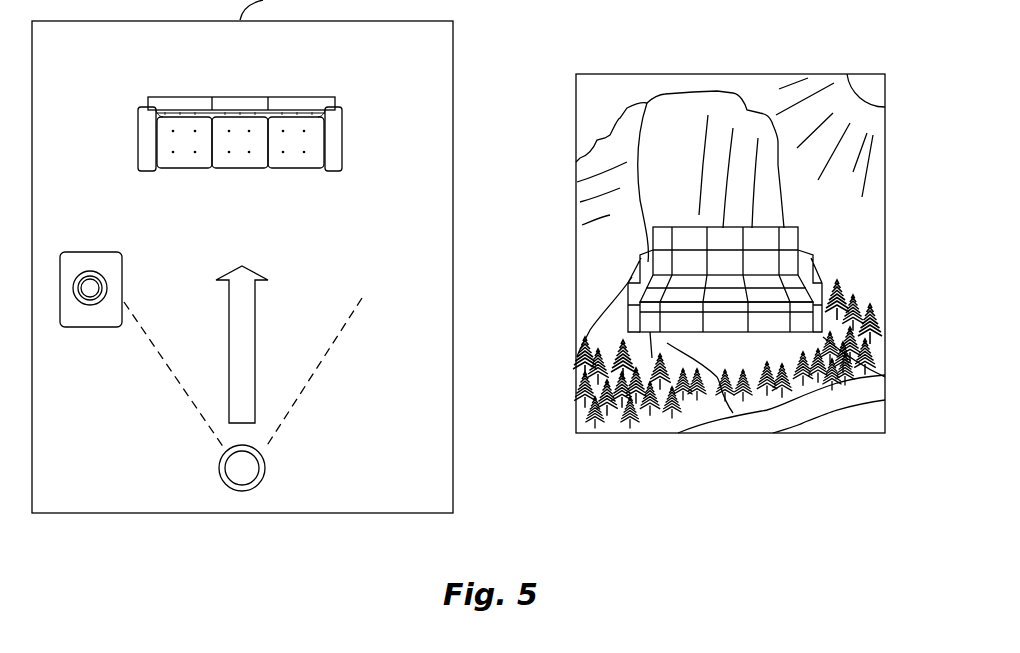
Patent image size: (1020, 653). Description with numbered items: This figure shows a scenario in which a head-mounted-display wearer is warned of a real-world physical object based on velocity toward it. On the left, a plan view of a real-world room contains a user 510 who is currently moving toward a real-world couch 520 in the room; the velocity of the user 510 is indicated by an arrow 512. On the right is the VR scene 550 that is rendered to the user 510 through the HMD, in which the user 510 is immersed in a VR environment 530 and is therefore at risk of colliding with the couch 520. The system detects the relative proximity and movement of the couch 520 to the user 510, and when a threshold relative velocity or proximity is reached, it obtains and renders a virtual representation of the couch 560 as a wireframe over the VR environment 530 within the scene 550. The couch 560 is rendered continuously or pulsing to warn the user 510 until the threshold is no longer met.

The user 510 is at (265, 460).
The arrow 512 is at (255, 330).
The real-world couch 520 is at (322, 96).
The VR environment 530 is at (850, 225).
The VR scene 550 is at (731, 74).
The virtual representation of the couch 560 is at (822, 272).